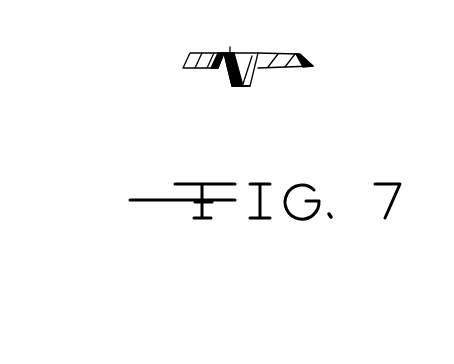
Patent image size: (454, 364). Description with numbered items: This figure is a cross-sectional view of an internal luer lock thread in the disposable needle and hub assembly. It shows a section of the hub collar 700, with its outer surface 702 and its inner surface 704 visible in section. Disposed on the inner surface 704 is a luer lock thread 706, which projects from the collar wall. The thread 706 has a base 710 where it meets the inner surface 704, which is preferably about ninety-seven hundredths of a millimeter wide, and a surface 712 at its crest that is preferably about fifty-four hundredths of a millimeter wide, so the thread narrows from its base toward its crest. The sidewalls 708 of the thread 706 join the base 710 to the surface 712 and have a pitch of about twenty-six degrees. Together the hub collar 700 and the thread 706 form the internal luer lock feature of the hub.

The hub collar 700 is at (320, 60).
The outer surface 702 is at (254, 53).
The inner surface 704 is at (287, 69).
The luer lock thread 706 is at (215, 100).
The sidewalls 708 is at (227, 82).
The base 710 is at (230, 52).
The surface 712 is at (243, 87).